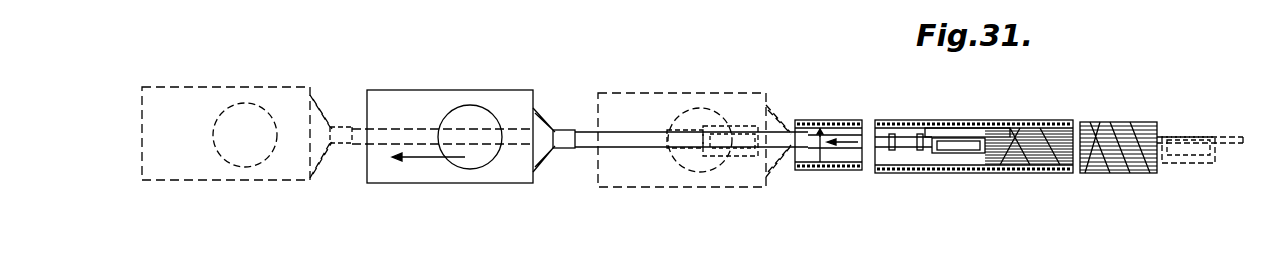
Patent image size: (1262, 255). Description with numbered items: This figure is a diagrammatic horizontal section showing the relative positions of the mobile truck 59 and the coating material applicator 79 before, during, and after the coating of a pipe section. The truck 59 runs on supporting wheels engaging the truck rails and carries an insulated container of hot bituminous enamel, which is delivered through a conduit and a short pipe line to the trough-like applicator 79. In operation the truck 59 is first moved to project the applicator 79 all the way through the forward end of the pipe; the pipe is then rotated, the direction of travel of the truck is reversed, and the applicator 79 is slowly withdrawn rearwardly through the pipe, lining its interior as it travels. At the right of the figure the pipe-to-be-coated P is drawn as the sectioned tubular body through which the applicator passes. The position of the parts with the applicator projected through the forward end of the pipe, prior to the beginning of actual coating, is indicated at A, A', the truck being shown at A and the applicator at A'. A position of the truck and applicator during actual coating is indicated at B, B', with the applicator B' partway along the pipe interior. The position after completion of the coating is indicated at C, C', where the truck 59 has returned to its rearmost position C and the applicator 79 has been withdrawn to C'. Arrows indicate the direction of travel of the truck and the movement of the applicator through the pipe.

The mobile truck 59 is at (466, 137).
The coating material applicator 79 is at (955, 160).
The truck position after completion of coating C is at (247, 120).
The truck position during coating B is at (463, 122).
The truck position before coating A is at (694, 124).
The pump housing P is at (927, 120).
The applicator position after completion of coating C' is at (712, 154).
The applicator position during coating B' is at (967, 161).
The applicator position before coating A' is at (1200, 165).